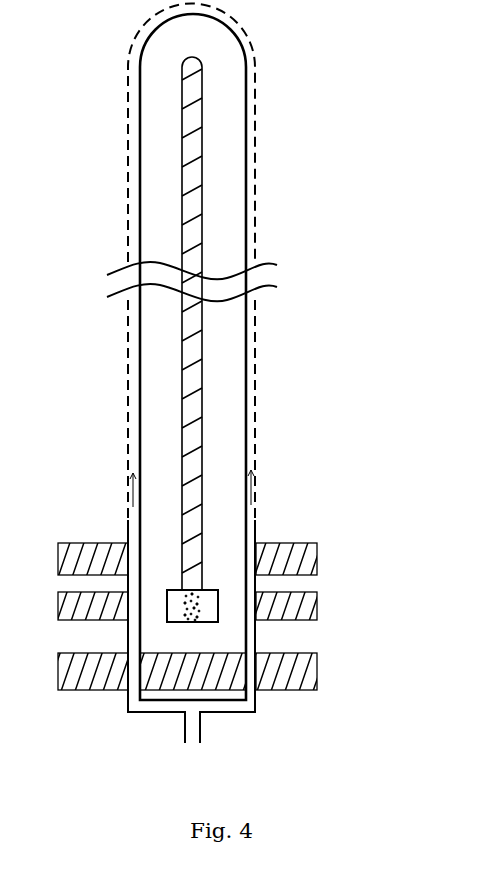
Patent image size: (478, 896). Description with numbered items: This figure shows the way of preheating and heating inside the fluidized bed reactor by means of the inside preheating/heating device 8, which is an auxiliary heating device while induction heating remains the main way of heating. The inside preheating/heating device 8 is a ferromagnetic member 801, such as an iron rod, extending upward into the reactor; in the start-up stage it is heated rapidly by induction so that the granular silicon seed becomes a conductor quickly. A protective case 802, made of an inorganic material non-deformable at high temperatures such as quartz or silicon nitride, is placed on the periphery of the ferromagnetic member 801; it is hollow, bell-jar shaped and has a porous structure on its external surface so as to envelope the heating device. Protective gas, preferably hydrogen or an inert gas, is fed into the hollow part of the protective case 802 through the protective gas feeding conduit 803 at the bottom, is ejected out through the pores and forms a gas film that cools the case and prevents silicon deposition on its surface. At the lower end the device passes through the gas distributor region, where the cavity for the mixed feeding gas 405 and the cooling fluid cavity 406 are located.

The inside preheating/heating device 8 is at (265, 148).
The ferromagnetic member 801 is at (203, 222).
The protective case 802 is at (257, 348).
The protective gas feeding conduit 803 is at (195, 743).
The cavity for the mixed feeding gas 405 is at (297, 637).
The cooling fluid cavity 406 is at (296, 583).